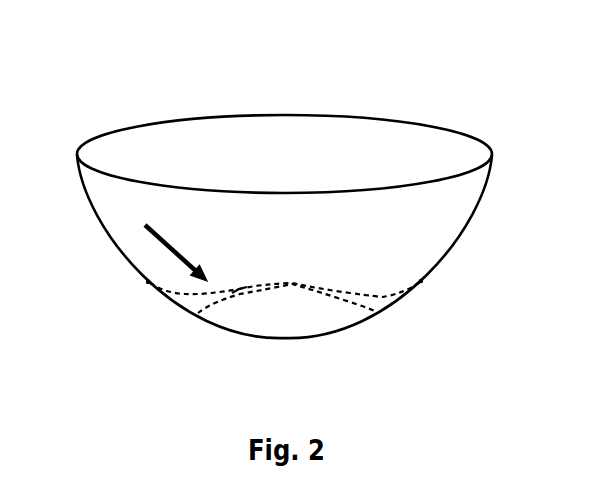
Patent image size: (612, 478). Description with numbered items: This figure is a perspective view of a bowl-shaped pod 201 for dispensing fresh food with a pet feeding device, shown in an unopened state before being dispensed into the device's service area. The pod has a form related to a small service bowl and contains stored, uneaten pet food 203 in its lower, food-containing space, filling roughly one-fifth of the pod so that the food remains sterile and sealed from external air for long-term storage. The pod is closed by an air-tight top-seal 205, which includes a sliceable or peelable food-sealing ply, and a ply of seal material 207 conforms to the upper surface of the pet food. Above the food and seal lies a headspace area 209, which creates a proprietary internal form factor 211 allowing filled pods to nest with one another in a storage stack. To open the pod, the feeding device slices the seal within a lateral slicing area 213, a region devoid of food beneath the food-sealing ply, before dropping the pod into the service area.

The bowl-shaped pod 201 is at (296, 224).
The stored, uneaten pet food 203 is at (308, 317).
The air-tight top-seal 205 is at (292, 284).
The ply of seal material 207 is at (239, 289).
The headspace area 209 is at (320, 156).
The internal form factor 211 is at (162, 244).
The lateral slicing area 213 is at (383, 297).